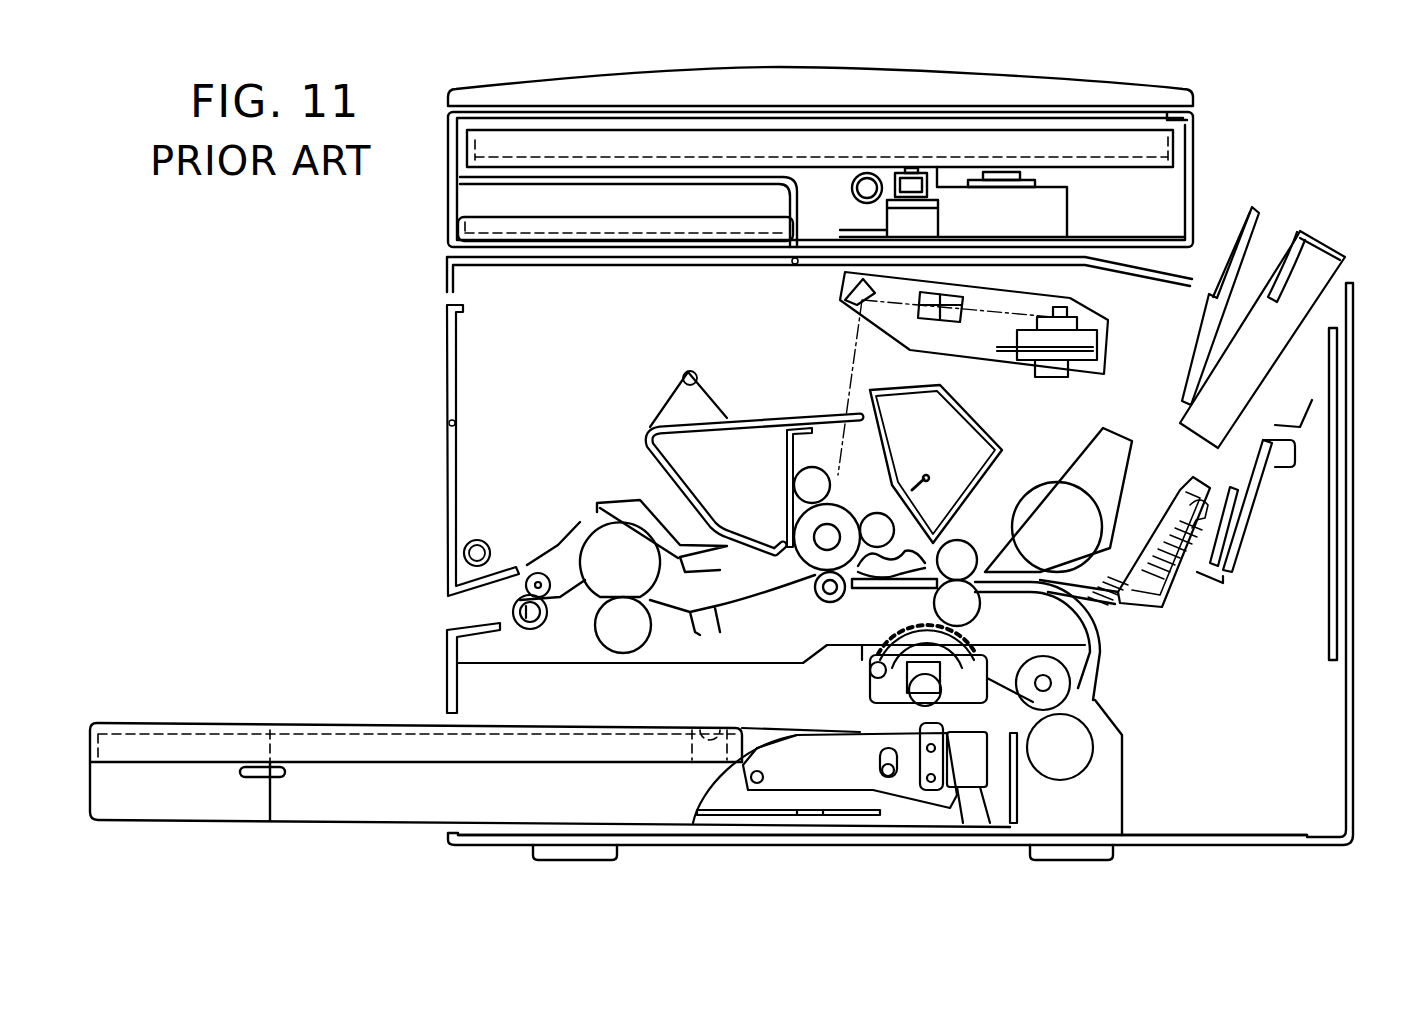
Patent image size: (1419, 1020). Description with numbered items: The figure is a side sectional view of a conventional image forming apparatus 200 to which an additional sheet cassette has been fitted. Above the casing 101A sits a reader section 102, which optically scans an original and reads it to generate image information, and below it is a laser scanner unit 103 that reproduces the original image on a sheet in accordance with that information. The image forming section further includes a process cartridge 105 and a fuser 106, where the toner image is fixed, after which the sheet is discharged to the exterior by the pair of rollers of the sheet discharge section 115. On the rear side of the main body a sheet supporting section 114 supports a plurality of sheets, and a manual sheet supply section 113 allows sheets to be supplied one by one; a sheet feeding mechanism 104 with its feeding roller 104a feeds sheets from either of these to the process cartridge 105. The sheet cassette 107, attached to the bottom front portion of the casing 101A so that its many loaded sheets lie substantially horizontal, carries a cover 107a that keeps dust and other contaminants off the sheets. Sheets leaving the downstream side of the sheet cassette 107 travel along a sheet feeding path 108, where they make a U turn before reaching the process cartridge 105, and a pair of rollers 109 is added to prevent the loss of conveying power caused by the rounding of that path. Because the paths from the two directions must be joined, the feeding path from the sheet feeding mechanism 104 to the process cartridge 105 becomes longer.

The casing 101A is at (1355, 813).
The reader section 102 is at (1178, 168).
The laser scanner unit 103 is at (1093, 322).
The sheet feeding mechanism 104 is at (1147, 490).
The feeding roller 104a is at (1048, 498).
The process cartridge 105 is at (643, 450).
The fuser 106 is at (590, 558).
The sheet cassette 107 is at (373, 808).
The cover 107a is at (377, 745).
The sheet feeding path 108 is at (1117, 619).
The pair of rollers 109 is at (945, 603).
The manual sheet supply section 113 is at (1258, 210).
The sheet supporting section 114 is at (1343, 256).
The sheet discharge section 115 is at (512, 600).
The image forming apparatus 200 is at (918, 883).